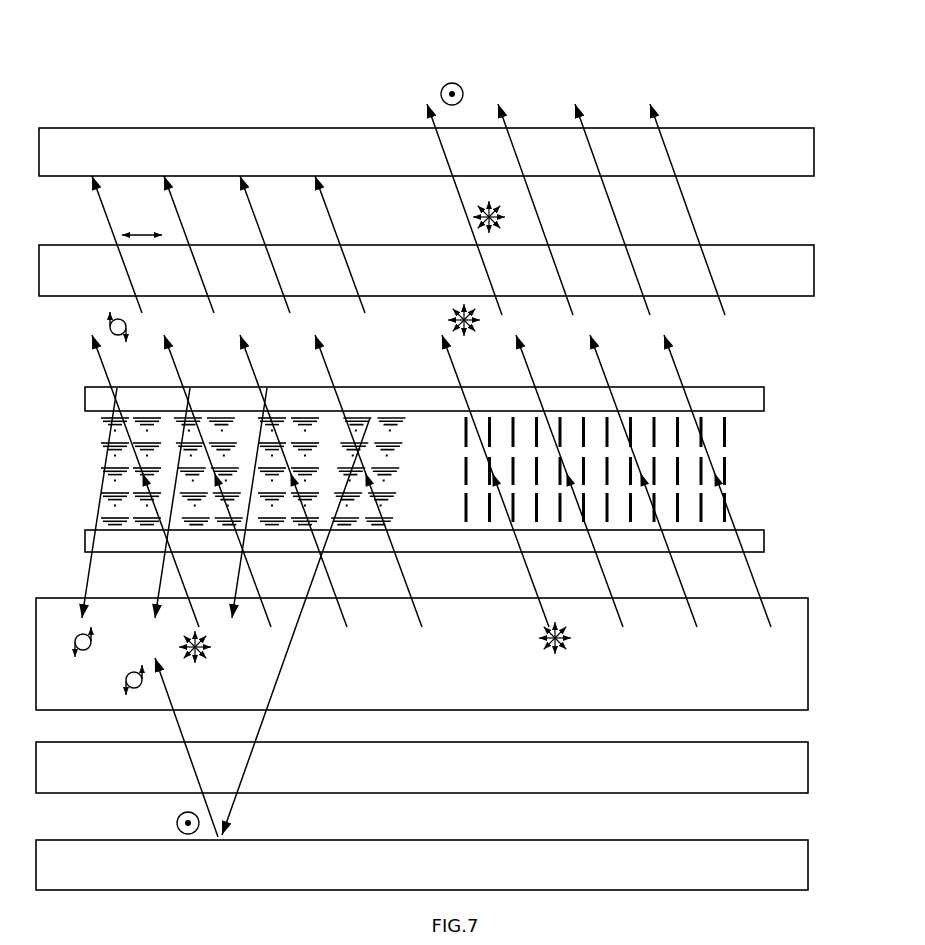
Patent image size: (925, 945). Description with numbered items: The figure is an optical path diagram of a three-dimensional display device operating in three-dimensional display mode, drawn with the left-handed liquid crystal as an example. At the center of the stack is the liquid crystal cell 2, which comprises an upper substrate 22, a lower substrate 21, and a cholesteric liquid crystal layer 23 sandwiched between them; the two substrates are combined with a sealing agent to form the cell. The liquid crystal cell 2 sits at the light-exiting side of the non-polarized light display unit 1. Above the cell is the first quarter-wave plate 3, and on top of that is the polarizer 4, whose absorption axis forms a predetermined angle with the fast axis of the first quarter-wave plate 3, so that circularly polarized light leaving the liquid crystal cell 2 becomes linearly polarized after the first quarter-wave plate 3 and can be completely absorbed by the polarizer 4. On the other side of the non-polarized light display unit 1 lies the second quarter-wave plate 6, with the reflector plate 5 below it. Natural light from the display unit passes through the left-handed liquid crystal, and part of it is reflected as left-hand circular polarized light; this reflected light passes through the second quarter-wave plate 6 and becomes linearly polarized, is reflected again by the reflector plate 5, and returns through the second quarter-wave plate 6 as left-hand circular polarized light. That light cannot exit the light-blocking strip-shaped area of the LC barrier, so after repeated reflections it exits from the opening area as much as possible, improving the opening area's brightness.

The non-polarized light display unit 1 is at (810, 658).
The liquid crystal cell 2 is at (475, 462).
The first quarter-wave plate 3 is at (816, 270).
The polarizer 4 is at (816, 150).
The reflector plate 5 is at (810, 862).
The second quarter-wave plate 6 is at (810, 763).
The lower substrate 21 is at (766, 543).
The upper substrate 22 is at (766, 403).
The liquid crystal layer 23 is at (750, 470).